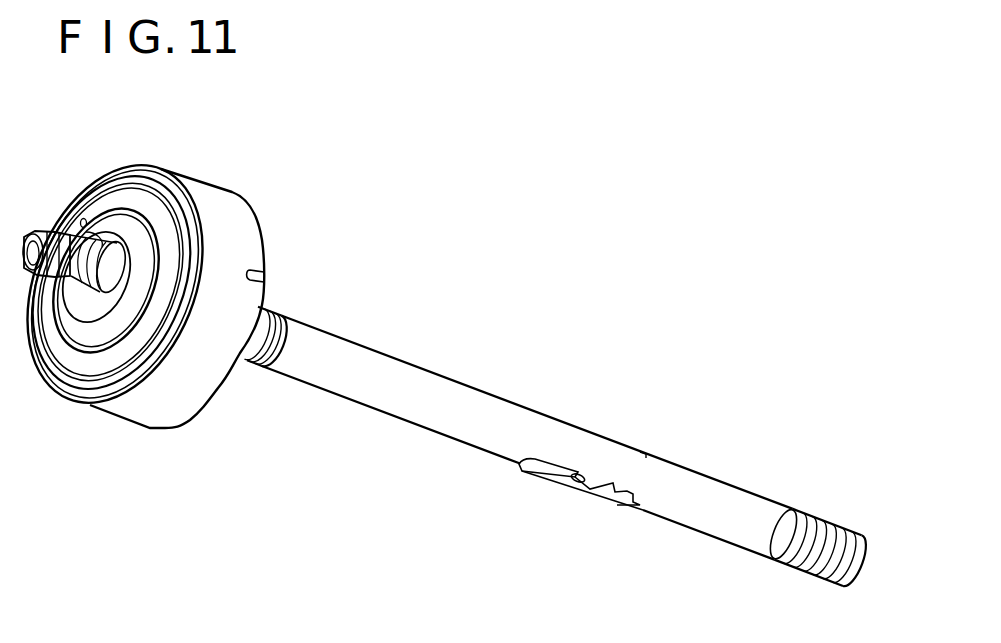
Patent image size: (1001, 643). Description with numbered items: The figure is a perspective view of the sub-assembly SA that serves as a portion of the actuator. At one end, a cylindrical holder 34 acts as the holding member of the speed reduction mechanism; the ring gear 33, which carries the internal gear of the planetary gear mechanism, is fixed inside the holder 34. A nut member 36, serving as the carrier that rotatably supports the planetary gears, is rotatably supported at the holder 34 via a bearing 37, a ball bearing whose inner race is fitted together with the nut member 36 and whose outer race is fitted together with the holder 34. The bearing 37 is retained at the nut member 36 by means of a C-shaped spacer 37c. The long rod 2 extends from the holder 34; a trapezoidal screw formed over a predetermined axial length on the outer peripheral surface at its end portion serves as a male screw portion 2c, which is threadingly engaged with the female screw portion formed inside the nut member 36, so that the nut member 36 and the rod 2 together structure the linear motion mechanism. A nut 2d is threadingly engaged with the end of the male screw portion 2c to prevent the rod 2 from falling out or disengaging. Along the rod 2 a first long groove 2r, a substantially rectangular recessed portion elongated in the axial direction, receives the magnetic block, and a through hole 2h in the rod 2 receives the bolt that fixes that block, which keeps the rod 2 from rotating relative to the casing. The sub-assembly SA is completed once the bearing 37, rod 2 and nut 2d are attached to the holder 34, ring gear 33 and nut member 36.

The rod 2 is at (453, 397).
The male screw portion 2c is at (63, 308).
The nut 2d is at (36, 231).
The through hole 2h is at (577, 485).
The first long groove 2r is at (547, 471).
The ring gear 33 is at (263, 278).
The holder 34 is at (238, 235).
The nut member 36 is at (87, 307).
The bearing 37 is at (118, 192).
The C-shaped spacer 37c is at (37, 347).
The sub-assembly SA is at (408, 342).